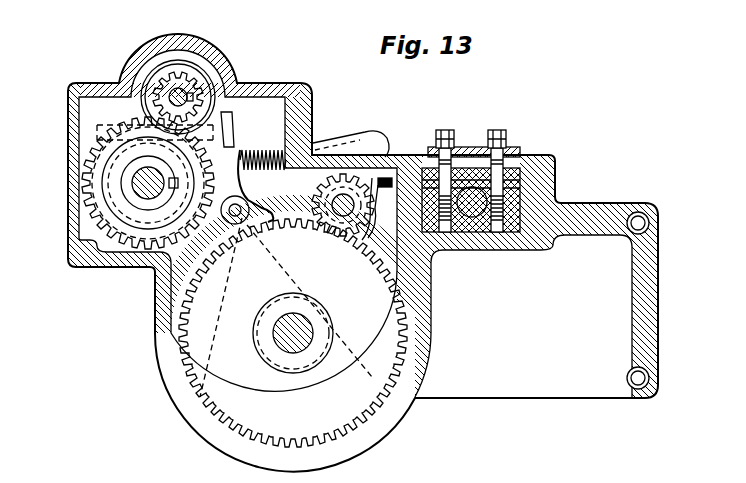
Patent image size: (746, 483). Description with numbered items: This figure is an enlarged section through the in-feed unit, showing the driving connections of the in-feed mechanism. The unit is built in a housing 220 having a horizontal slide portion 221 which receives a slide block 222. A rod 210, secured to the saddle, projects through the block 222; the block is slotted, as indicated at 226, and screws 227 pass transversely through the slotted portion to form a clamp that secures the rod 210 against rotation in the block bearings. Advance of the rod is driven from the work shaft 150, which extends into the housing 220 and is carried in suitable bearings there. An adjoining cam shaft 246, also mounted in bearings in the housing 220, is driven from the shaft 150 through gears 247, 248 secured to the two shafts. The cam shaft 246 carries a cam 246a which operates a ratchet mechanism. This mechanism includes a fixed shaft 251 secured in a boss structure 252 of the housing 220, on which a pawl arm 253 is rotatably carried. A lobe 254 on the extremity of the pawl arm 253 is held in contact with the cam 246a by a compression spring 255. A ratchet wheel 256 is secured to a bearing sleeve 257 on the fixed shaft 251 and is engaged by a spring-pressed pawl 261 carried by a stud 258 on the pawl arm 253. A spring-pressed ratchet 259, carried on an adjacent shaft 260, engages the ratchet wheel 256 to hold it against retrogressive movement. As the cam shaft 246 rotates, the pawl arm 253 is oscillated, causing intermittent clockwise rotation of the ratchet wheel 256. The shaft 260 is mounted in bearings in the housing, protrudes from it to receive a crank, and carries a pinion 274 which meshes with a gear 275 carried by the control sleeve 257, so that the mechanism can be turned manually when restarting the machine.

The work shaft 150 is at (176, 248).
The rod 210 is at (516, 169).
The housing 220 is at (660, 303).
The horizontal slide portion 221 is at (517, 188).
The slide block 222 is at (517, 180).
The slotted portion 226 is at (487, 197).
The screws 227 is at (444, 135).
The cam shaft 246 is at (114, 183).
The cam 246a is at (74, 183).
The gear 247 is at (176, 94).
The gear 248 is at (118, 118).
The fixed shaft 251 is at (310, 344).
The boss structure 252 is at (418, 375).
The pawl arm 253 is at (227, 283).
The lobe 254 is at (140, 272).
The compression spring 255 is at (262, 147).
The ratchet wheel 256 is at (182, 365).
The bearing sleeve 257 is at (266, 332).
The stud 258 is at (318, 146).
The spring-pressed ratchet 259 is at (362, 250).
The shaft 260 is at (375, 182).
The spring-pressed pawl 261 is at (240, 207).
The pinion 274 is at (378, 150).
The gear 275 is at (216, 418).